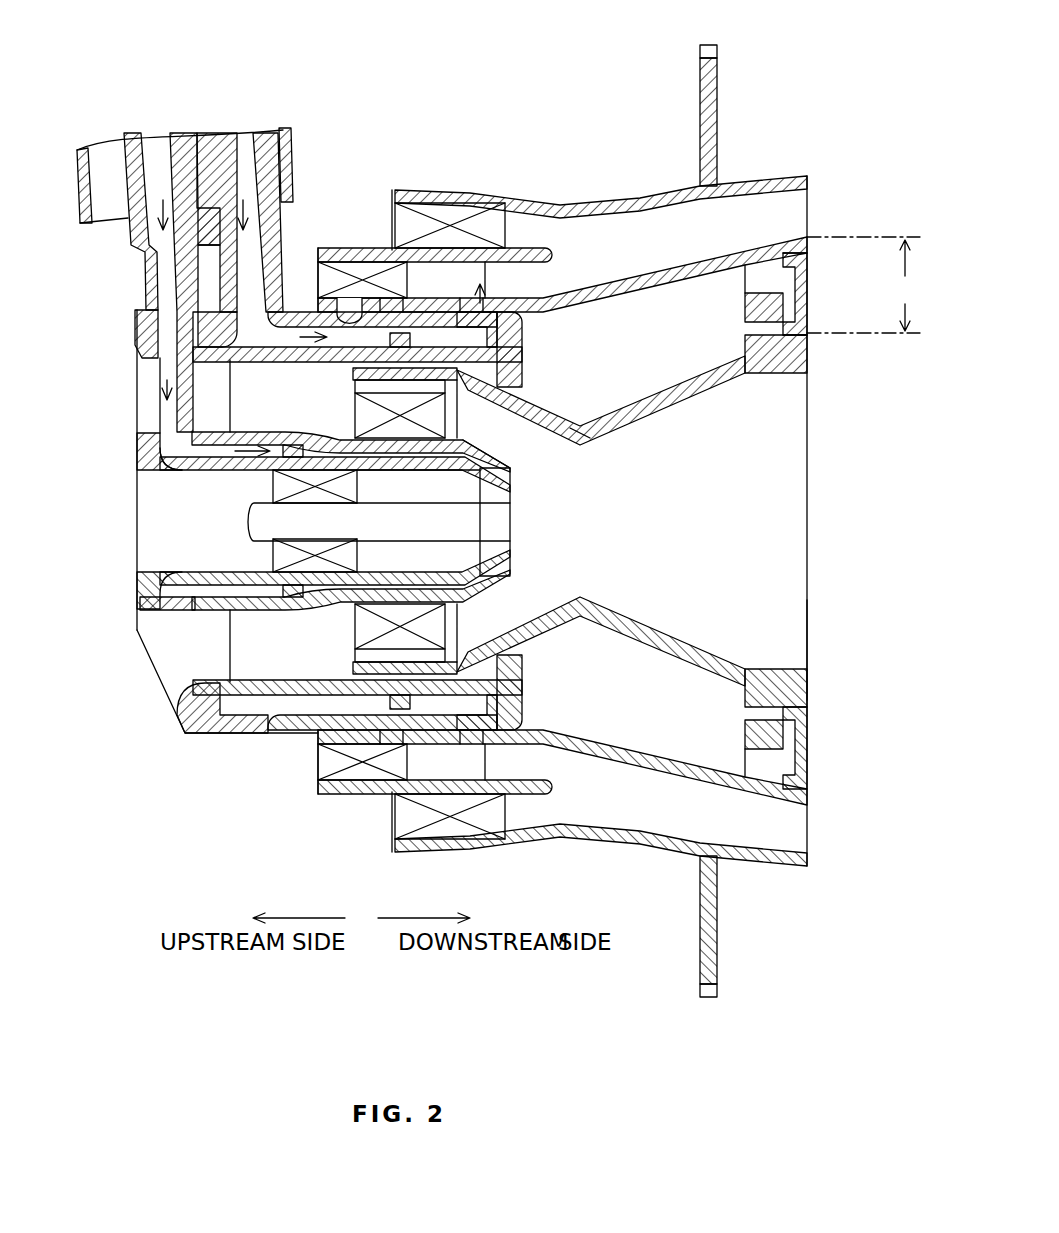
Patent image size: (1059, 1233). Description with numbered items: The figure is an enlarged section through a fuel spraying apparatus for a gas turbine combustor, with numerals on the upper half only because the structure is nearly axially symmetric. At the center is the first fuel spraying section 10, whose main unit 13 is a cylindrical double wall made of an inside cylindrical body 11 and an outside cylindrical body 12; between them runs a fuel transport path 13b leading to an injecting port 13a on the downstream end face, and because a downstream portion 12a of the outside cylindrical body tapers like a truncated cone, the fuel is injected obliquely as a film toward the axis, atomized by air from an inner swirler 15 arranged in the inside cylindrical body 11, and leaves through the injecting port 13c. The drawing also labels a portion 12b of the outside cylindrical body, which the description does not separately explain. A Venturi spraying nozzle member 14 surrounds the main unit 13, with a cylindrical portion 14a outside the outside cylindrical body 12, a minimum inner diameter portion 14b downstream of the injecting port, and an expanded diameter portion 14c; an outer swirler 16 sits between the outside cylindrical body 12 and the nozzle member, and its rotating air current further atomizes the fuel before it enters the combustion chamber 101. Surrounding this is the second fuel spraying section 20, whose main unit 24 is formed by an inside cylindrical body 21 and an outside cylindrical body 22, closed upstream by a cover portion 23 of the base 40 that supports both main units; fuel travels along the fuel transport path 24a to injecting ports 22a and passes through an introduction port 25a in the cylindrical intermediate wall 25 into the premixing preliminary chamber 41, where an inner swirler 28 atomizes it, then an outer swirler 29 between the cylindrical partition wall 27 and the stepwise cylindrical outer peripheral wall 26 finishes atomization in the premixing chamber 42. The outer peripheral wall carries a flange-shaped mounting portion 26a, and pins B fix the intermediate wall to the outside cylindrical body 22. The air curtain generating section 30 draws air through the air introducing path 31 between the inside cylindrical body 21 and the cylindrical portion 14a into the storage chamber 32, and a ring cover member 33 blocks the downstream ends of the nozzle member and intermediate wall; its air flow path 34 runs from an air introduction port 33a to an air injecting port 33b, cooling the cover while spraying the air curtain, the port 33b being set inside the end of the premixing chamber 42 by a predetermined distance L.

The first fuel spraying section 10 is at (840, 612).
The combustion chamber 101 is at (890, 533).
The inside cylindrical body 11 is at (150, 476).
The outside cylindrical body 12 is at (150, 437).
The downstream portion 12a is at (488, 449).
The housing inner wall 12b is at (421, 440).
The main unit 13 is at (133, 540).
The injecting port 13a is at (512, 482).
The fuel transport path 13b is at (383, 458).
The injecting port 13c is at (512, 543).
The Venturi spraying nozzle member 14 is at (690, 400).
The cylindrical portion 14a is at (358, 407).
The minimum inner diameter portion 14b is at (580, 432).
The expanded diameter portion 14c is at (770, 360).
The inner swirler 15 is at (266, 553).
The outer swirler 16 is at (352, 632).
The second fuel spraying section 20 is at (816, 196).
The inside cylindrical body 21 is at (252, 364).
The outside cylindrical body 22 is at (290, 305).
The injecting port 22a is at (472, 321).
The cover portion 23 is at (133, 310).
The main unit 24 is at (112, 345).
The fuel transport path 24a is at (502, 368).
The cylindrical intermediate wall 25 is at (580, 283).
The introduction port 25a is at (484, 300).
The cylindrical outer peripheral wall 26 is at (763, 176).
The mounting portion 26a is at (717, 46).
The cylindrical partition wall 27 is at (536, 256).
The inner swirler 28 is at (316, 270).
The outer swirler 29 is at (391, 235).
The air curtain generating section 30 is at (820, 245).
The air introducing path 31 is at (362, 372).
The storage chamber 32 is at (647, 357).
The cover member 33 is at (813, 277).
The air introduction port 33a is at (745, 282).
The air injecting port 33b is at (806, 336).
The air flow path 34 is at (790, 300).
The base 40 is at (152, 677).
The premixing preliminary chamber 41 is at (433, 273).
The premixing chamber 42 is at (720, 235).
The pin B is at (350, 312).
The predetermined distance L is at (863, 285).